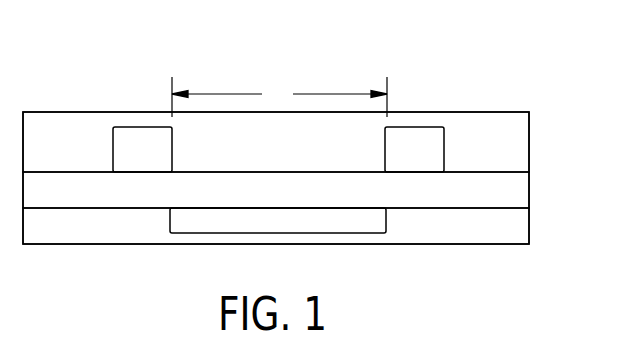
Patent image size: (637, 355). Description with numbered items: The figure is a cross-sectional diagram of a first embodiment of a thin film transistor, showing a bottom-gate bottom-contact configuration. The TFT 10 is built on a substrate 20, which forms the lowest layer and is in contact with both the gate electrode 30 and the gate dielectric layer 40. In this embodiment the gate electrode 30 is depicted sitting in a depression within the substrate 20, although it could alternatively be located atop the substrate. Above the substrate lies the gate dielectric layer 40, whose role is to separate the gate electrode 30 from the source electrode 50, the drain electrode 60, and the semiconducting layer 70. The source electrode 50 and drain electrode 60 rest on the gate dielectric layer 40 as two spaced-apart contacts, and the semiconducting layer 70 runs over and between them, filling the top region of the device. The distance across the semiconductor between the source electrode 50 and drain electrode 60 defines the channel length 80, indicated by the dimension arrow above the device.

The TFT 10 is at (125, 82).
The substrate 20 is at (60, 238).
The gate electrode 30 is at (350, 227).
The gate dielectric layer 40 is at (265, 200).
The source electrode 50 is at (130, 160).
The drain electrode 60 is at (404, 160).
The semiconducting layer 70 is at (265, 156).
The channel length 80 is at (279, 97).